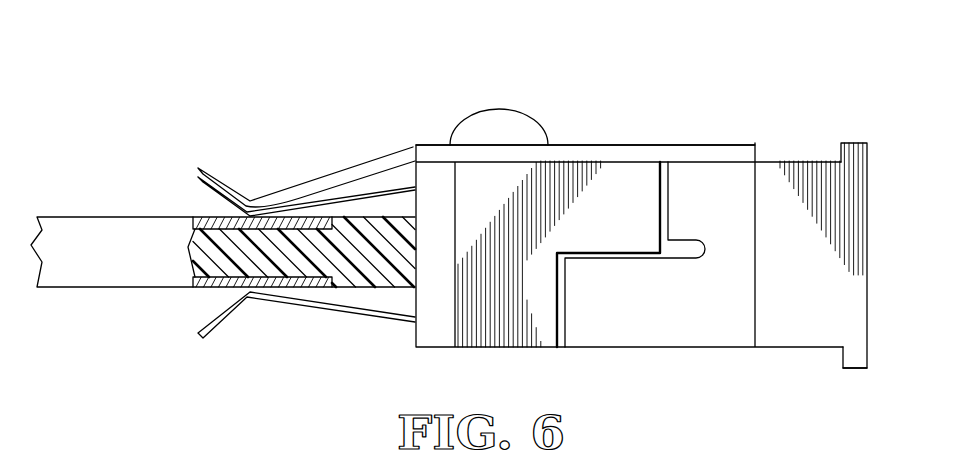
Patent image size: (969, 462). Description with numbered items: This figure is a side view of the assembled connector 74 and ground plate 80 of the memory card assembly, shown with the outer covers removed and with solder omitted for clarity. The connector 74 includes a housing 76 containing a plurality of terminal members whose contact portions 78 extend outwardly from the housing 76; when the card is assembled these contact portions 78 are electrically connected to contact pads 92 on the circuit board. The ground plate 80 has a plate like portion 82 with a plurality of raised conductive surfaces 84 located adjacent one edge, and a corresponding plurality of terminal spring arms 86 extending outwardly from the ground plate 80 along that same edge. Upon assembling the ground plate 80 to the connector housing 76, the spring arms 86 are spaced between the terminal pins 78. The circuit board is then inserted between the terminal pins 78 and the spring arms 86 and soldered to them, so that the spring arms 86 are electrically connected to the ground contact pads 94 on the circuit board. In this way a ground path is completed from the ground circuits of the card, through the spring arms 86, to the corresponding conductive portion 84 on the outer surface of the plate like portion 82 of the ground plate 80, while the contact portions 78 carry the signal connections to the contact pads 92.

The connector 74 is at (805, 141).
The housing 76 is at (852, 320).
The contact portions 78 is at (382, 192).
The ground plate 80 is at (715, 126).
The plate like portion 82 is at (613, 144).
The raised conductive surfaces 84 is at (500, 108).
The terminal spring arms 86 is at (306, 184).
The contact pads 92 is at (185, 277).
The ground contact pads 94 is at (197, 228).